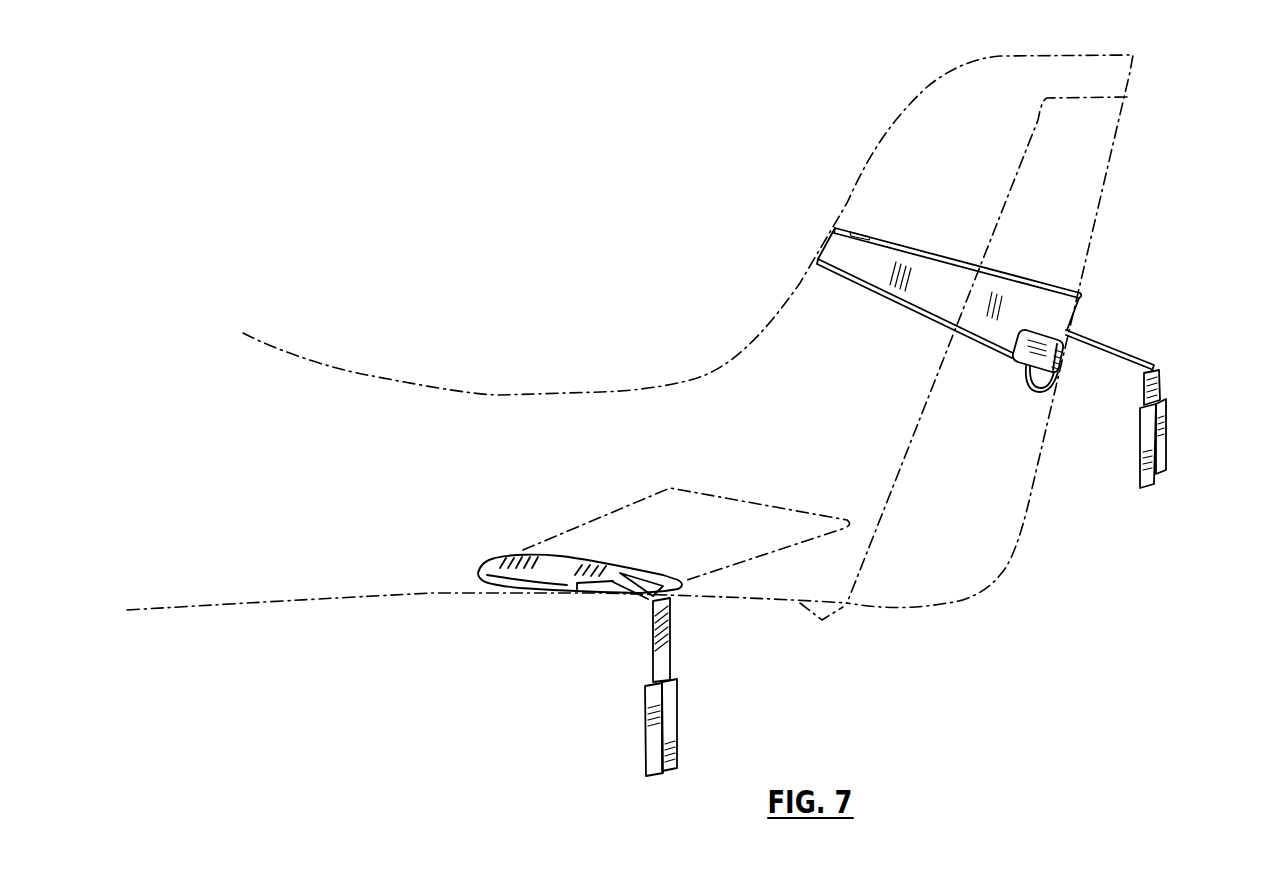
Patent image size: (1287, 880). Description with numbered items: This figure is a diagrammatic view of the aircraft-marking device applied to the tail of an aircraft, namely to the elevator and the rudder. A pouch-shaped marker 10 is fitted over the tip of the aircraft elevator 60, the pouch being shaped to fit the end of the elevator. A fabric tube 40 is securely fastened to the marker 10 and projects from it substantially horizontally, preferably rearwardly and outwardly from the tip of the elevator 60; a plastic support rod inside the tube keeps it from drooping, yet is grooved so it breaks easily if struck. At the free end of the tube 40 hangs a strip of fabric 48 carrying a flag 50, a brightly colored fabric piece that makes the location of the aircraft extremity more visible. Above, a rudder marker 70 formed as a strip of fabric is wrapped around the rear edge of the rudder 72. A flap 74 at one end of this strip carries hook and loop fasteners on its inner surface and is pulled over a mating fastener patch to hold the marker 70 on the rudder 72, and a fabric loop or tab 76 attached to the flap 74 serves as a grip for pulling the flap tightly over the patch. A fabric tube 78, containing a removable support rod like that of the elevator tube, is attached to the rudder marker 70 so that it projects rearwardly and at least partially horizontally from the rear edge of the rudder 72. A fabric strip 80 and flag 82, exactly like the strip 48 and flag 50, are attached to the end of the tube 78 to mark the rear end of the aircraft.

The marker 10 is at (473, 552).
The fabric tube 40 is at (620, 574).
The strip of fabric 48 is at (672, 647).
The flag 50 is at (678, 710).
The elevator 60 is at (613, 523).
The rudder marker 70 is at (937, 232).
The rudder 72 is at (1113, 163).
The flap 74 is at (1043, 330).
The fabric loop or tab 76 is at (1033, 388).
The fabric tube 78 is at (1118, 350).
The fabric strip 80 is at (1161, 378).
The flag 82 is at (1167, 430).